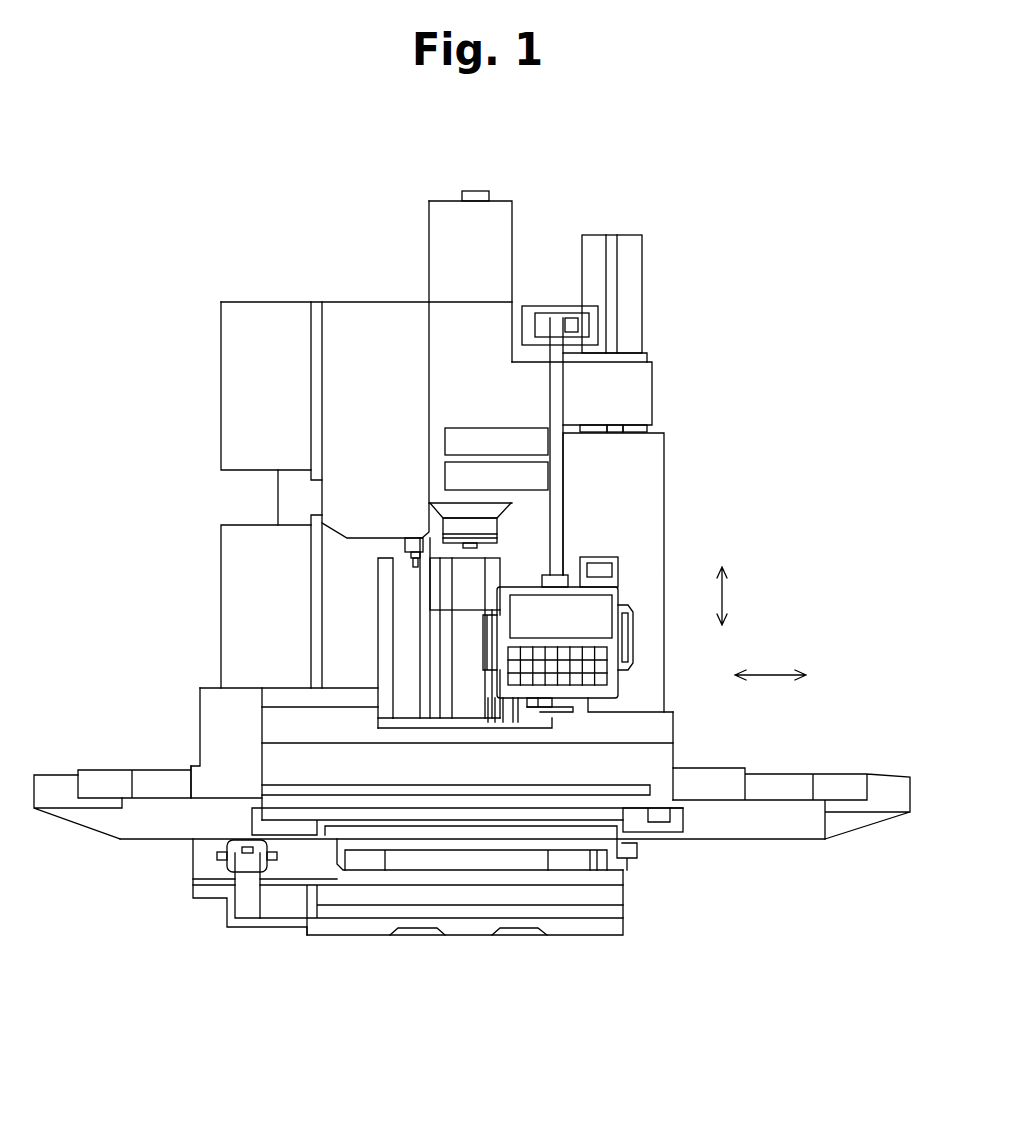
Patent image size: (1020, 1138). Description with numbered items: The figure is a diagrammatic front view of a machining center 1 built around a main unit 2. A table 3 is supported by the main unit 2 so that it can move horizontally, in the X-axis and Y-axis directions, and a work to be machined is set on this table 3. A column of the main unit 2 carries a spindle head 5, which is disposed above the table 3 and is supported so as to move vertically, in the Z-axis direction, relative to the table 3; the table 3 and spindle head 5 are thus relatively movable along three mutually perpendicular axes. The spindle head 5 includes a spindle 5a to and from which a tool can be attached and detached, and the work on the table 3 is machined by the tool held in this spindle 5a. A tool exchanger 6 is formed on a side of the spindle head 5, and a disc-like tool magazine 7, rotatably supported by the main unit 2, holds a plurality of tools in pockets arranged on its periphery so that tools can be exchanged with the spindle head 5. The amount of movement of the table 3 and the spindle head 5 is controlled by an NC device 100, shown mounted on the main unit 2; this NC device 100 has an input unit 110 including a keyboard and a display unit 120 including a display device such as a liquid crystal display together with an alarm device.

The machining center 1 is at (697, 250).
The main unit 2 is at (670, 433).
The table 3 is at (665, 760).
The spindle head 5 is at (438, 393).
The spindle 5a is at (498, 540).
The tool exchanger 6 is at (415, 563).
The tool magazine 7 is at (278, 497).
The NC device 100 is at (613, 682).
The input unit 110 is at (608, 660).
The display unit 120 is at (600, 608).